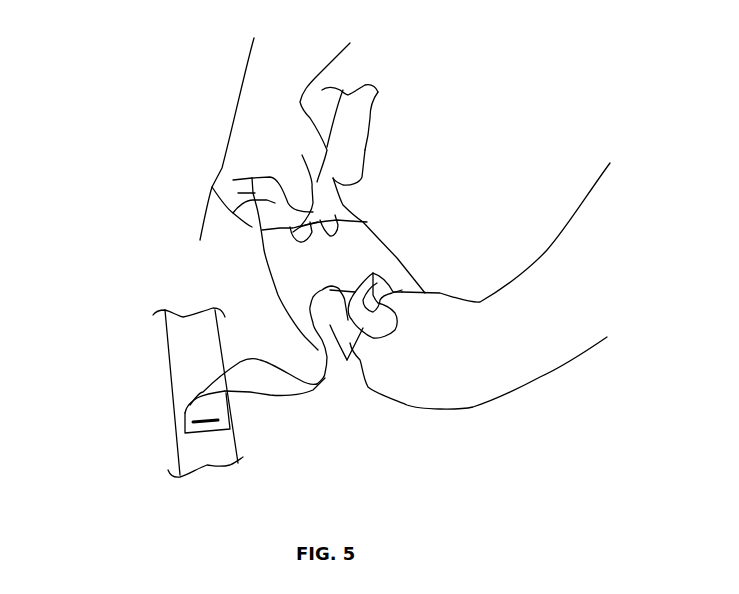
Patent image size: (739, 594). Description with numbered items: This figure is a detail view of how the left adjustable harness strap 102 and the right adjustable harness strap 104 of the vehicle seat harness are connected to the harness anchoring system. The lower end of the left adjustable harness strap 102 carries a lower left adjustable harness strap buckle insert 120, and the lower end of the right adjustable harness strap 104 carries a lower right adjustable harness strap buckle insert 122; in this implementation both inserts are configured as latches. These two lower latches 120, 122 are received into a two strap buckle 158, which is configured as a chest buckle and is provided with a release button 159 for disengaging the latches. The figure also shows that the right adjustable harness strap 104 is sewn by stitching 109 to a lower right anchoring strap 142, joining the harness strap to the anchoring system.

The left adjustable harness strap 102 is at (355, 122).
The lower left adjustable harness strap buckle insert 120 is at (367, 222).
The right adjustable harness strap 104 is at (230, 370).
The lower right adjustable harness strap buckle insert 122 is at (297, 238).
The release button 159 is at (313, 297).
The two strap buckle 158 is at (350, 270).
The stitching 109 is at (190, 420).
The lower right anchoring strap 142 is at (197, 460).